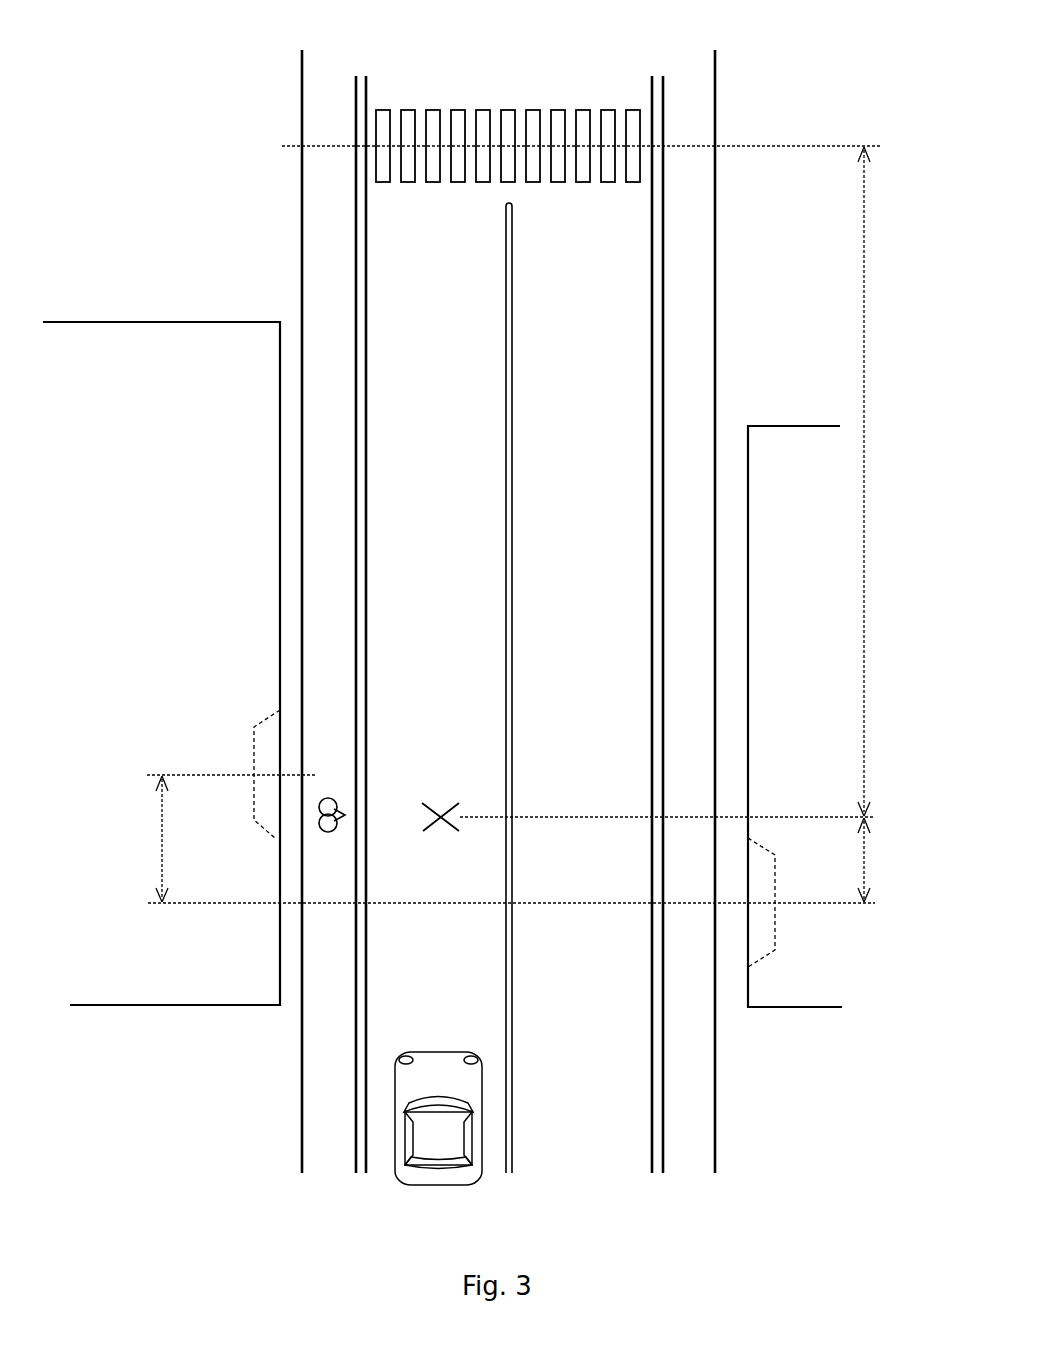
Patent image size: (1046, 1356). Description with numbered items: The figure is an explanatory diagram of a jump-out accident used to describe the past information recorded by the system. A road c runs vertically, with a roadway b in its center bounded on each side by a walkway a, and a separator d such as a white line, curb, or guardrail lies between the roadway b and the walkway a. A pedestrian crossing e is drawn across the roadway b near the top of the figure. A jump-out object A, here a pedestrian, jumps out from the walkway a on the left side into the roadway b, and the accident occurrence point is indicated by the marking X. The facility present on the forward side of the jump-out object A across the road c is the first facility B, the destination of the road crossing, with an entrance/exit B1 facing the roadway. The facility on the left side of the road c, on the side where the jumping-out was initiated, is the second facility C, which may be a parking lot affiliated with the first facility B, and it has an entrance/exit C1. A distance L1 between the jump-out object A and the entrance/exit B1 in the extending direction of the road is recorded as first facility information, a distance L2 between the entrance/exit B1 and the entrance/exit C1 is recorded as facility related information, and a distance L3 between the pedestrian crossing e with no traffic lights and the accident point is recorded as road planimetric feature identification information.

The walkway a is at (325, 195).
The roadway b is at (383, 278).
The road c is at (715, 50).
The separator d is at (356, 237).
The pedestrian crossing e is at (652, 80).
The jump-out object A is at (322, 820).
The first facility B is at (798, 425).
The second facility C is at (86, 322).
The entrance/exit of the first facility B1 is at (770, 913).
The entrance/exit of the second facility C1 is at (256, 747).
The distance L1 is at (866, 855).
The distance L2 is at (160, 840).
The distance L3 is at (866, 545).